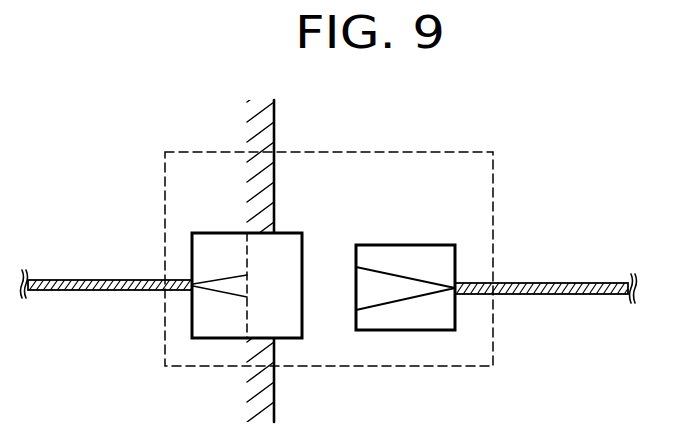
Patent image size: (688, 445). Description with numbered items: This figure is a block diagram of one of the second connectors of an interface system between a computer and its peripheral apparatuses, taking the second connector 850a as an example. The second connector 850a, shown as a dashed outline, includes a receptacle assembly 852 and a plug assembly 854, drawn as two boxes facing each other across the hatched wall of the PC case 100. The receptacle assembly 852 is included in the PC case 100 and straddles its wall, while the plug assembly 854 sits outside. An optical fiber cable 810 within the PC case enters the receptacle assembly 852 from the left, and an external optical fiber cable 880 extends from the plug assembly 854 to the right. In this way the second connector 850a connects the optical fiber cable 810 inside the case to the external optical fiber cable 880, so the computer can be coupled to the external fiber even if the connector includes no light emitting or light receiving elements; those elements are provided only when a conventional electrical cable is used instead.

The PC case 100 is at (275, 127).
The optical fiber cable 810 is at (75, 292).
The external optical fiber cable 880 is at (563, 295).
The second connector 850a is at (493, 205).
The receptacle assembly 852 is at (213, 233).
The plug assembly 854 is at (402, 245).